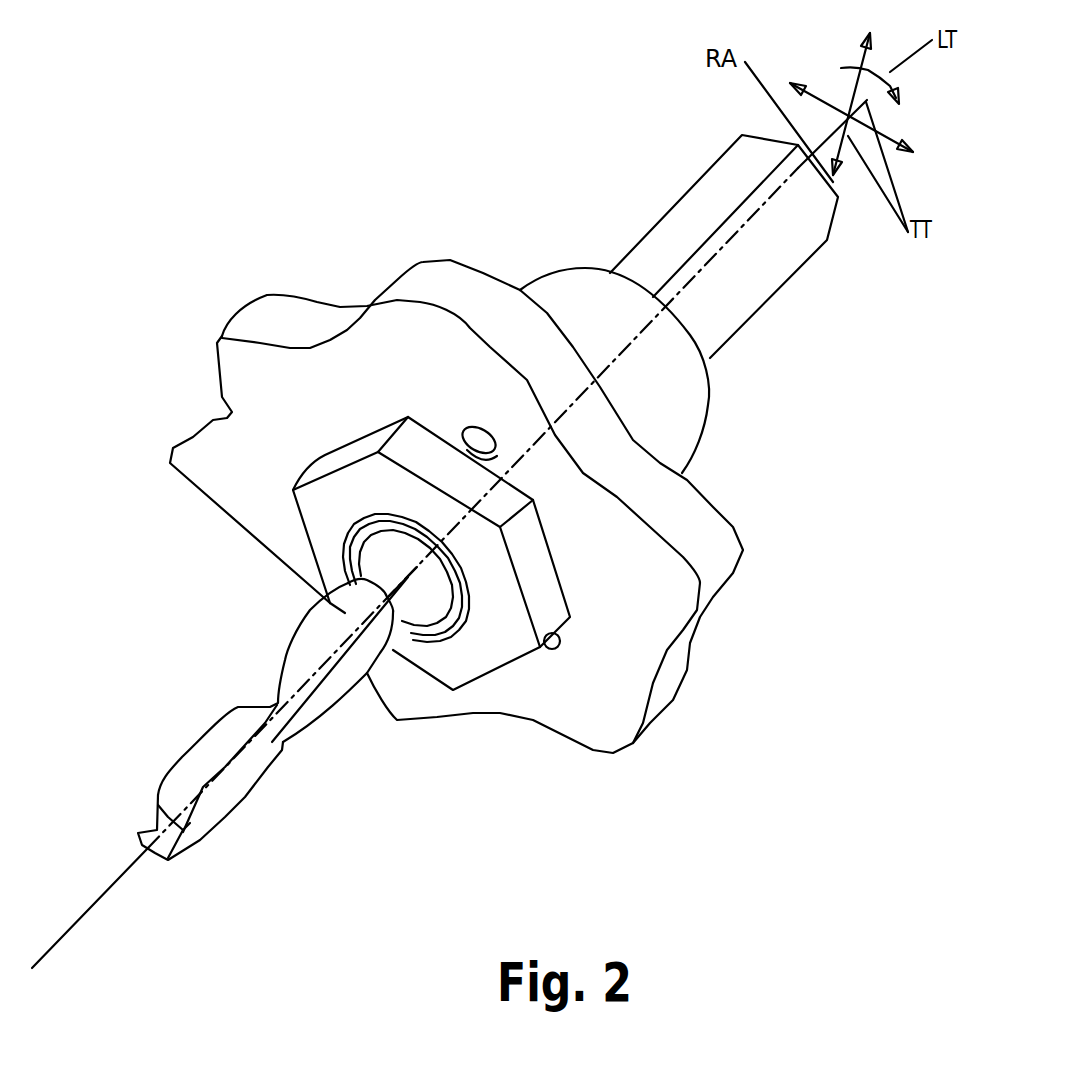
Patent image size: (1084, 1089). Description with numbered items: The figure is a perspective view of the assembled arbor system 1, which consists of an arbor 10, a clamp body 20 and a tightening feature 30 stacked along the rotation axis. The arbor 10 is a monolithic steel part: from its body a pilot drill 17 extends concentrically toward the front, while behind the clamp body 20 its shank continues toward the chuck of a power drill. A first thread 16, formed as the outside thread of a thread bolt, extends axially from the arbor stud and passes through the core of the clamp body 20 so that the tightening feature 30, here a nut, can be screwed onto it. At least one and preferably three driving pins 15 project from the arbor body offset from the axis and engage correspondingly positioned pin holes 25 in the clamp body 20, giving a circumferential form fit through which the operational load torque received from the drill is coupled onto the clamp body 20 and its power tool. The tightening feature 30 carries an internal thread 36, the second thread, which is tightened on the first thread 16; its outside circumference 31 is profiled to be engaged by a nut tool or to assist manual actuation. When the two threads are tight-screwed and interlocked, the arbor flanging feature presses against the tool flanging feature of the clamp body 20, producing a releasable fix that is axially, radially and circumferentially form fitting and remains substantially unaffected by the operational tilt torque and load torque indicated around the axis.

The arbor system 1 is at (765, 700).
The arbor 10 is at (567, 268).
The driving pin 15 is at (475, 432).
The first thread 16 is at (455, 622).
The pilot drill 17 is at (283, 742).
The clamp body 20 is at (270, 312).
The pin hole 25 is at (497, 432).
The tightening feature 30 is at (320, 545).
The outside circumference 31 is at (510, 663).
The internal thread 36 is at (323, 473).